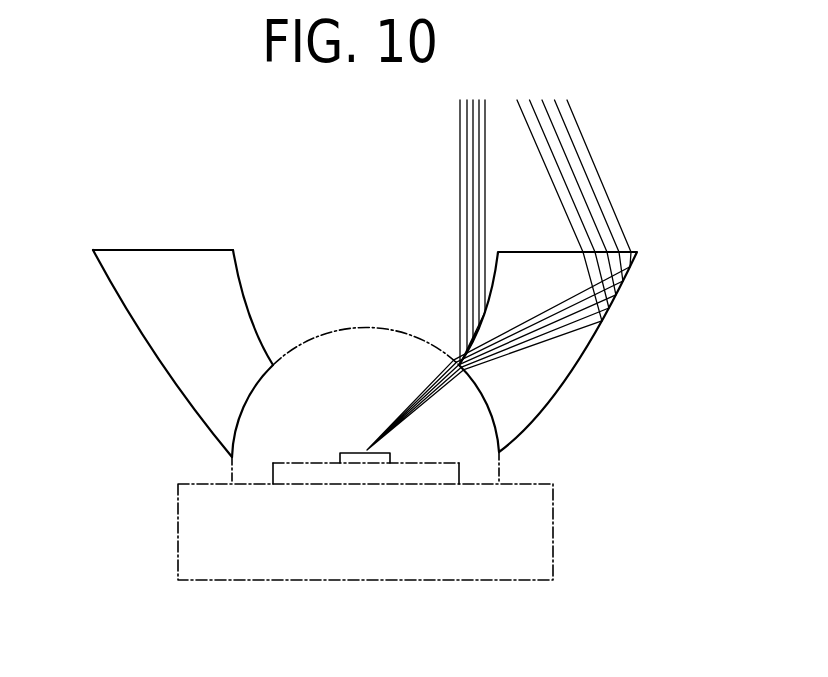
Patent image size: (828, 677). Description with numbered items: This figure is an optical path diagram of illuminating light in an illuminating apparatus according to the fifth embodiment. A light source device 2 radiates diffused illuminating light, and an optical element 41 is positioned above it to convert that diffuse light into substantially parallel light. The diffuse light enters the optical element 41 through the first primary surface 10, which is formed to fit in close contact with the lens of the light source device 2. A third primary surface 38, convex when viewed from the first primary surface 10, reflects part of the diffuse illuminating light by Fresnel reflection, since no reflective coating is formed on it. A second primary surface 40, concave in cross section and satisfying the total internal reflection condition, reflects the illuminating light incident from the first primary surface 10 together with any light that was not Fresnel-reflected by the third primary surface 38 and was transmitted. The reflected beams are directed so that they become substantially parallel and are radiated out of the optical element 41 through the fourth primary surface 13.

The light source device 2 is at (624, 528).
The primary surface-1 10 is at (232, 450).
The primary surface-4 13 is at (179, 314).
The primary surface-3 38 is at (242, 276).
The primary surface-2 40 is at (520, 402).
The optical element 41 is at (153, 330).